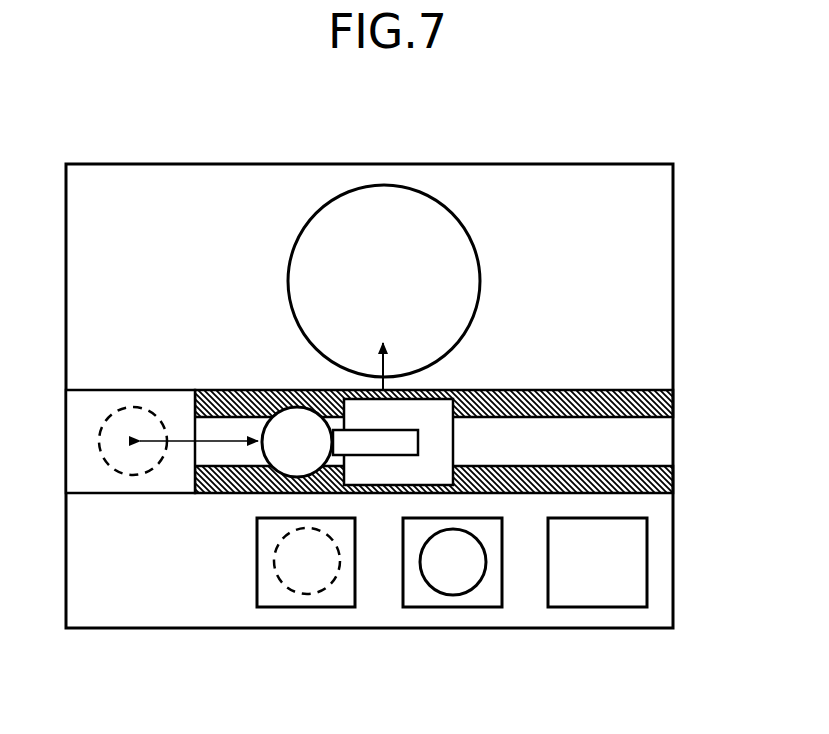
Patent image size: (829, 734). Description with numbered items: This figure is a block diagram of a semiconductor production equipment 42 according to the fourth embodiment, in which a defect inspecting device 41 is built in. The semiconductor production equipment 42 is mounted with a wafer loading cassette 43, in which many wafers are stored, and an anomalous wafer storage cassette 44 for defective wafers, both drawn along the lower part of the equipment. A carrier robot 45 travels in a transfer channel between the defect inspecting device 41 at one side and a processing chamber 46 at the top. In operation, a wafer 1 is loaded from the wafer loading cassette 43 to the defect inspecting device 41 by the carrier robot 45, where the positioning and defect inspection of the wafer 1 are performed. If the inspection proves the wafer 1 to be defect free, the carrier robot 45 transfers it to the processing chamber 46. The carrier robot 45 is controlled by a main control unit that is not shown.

The wafer 1 is at (297, 391).
The defect inspecting device 41 is at (64, 465).
The semiconductor production equipment 42 is at (674, 225).
The wafer loading cassette 43 is at (478, 608).
The anomalous wafer storage cassette 44 is at (334, 592).
The carrier robot 45 is at (446, 410).
The processing chamber 46 is at (412, 188).